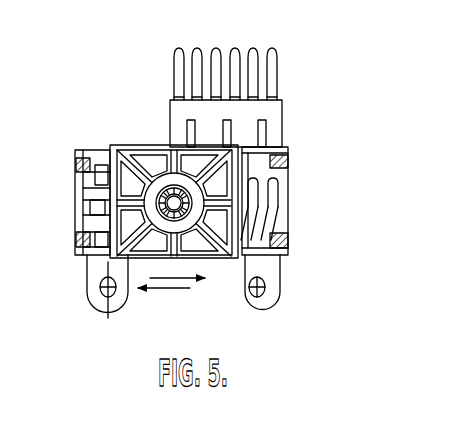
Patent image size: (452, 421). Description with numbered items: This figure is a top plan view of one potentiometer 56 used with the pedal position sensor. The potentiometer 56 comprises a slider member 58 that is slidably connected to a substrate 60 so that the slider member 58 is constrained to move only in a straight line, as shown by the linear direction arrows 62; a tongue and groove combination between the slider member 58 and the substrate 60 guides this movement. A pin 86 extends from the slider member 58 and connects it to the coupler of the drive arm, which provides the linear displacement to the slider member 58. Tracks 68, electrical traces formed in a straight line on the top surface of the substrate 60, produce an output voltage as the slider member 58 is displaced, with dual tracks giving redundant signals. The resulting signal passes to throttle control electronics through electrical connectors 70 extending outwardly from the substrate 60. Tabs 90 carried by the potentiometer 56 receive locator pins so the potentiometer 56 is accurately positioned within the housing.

The potentiometer 56 is at (304, 114).
The slider member 58 is at (131, 157).
The substrate 60 is at (288, 234).
The linear direction arrows 62 is at (168, 286).
The tracks 68 is at (255, 205).
The electrical connectors 70 is at (198, 50).
The pin 86 is at (174, 204).
The tabs 90 is at (268, 303).